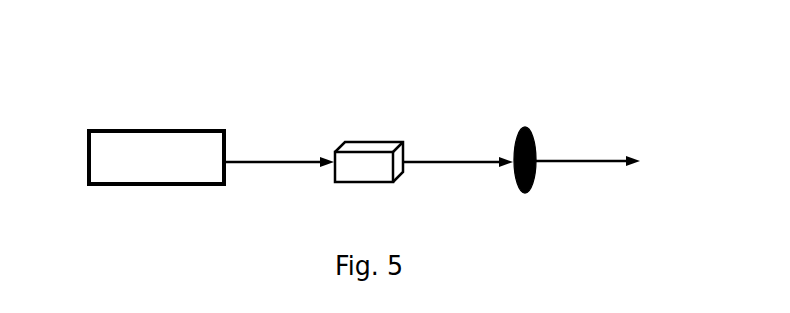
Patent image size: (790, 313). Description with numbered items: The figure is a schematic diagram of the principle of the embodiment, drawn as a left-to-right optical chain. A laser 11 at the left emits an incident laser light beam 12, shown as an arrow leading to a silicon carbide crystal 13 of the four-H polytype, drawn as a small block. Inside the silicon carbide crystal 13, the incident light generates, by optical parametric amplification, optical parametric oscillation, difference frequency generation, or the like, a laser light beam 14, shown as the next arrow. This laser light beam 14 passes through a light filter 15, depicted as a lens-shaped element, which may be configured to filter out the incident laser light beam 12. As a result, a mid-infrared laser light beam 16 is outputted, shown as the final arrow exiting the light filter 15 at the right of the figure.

The laser 11 is at (156, 157).
The incident laser light beam 12 is at (280, 148).
The 4H silicon carbide crystal 13 is at (369, 146).
The laser light beam 14 is at (458, 147).
The light filter 15 is at (534, 141).
The mid-infrared laser light beam 16 is at (588, 148).